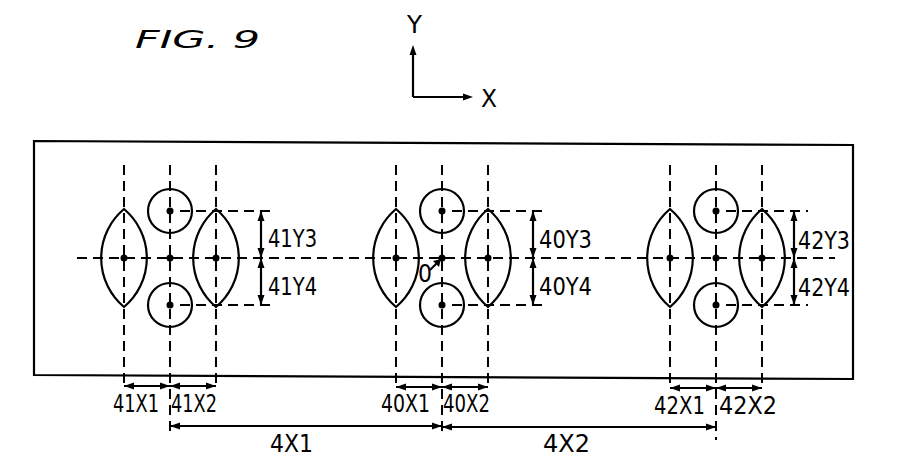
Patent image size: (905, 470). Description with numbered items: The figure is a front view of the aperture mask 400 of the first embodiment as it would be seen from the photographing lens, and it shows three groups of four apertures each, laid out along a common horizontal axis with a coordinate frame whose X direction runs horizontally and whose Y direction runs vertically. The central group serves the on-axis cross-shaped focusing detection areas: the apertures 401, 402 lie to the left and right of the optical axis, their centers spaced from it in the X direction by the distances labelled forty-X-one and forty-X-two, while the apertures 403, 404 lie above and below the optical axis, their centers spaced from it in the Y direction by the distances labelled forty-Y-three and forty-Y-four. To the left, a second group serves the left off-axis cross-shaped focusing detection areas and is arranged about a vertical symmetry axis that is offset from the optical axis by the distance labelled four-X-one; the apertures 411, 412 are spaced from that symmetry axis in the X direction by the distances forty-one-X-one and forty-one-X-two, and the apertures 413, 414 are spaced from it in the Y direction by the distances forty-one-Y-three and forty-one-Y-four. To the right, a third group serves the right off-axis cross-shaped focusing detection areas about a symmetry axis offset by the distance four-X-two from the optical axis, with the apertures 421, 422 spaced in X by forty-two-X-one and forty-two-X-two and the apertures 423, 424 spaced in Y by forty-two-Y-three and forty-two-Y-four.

The aperture mask 400 is at (855, 356).
The aperture 401 is at (380, 230).
The aperture 402 is at (501, 224).
The aperture 403 is at (458, 195).
The aperture 404 is at (459, 319).
The aperture 411 is at (108, 230).
The aperture 412 is at (229, 224).
The aperture 413 is at (186, 195).
The aperture 414 is at (187, 319).
The aperture 421 is at (654, 230).
The aperture 422 is at (775, 224).
The aperture 423 is at (732, 195).
The aperture 424 is at (733, 319).